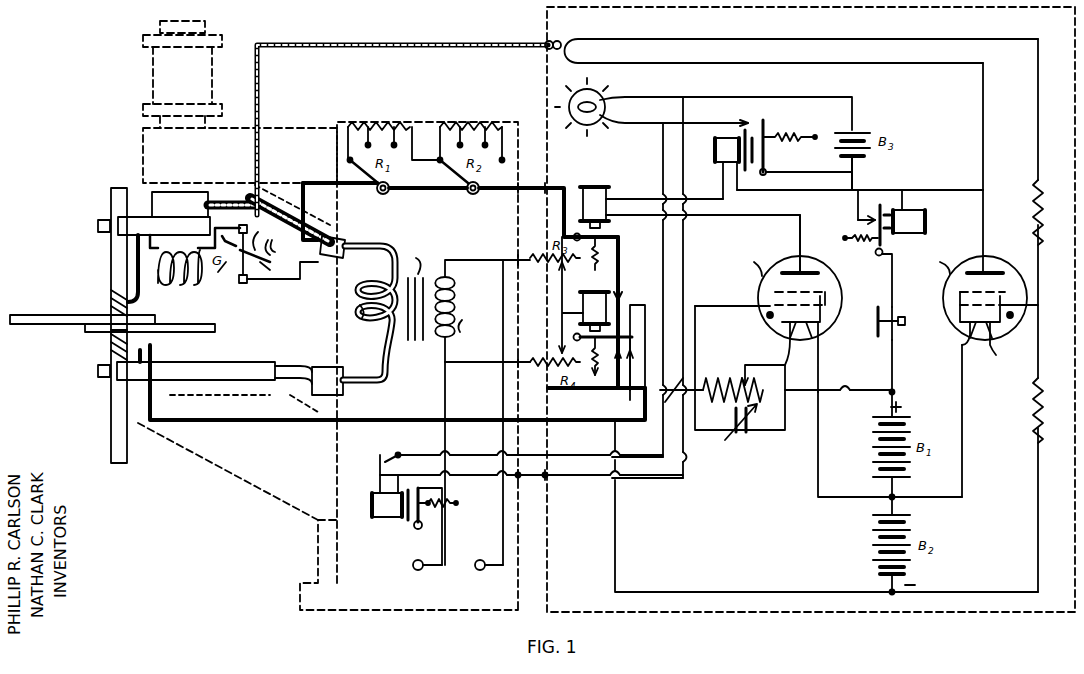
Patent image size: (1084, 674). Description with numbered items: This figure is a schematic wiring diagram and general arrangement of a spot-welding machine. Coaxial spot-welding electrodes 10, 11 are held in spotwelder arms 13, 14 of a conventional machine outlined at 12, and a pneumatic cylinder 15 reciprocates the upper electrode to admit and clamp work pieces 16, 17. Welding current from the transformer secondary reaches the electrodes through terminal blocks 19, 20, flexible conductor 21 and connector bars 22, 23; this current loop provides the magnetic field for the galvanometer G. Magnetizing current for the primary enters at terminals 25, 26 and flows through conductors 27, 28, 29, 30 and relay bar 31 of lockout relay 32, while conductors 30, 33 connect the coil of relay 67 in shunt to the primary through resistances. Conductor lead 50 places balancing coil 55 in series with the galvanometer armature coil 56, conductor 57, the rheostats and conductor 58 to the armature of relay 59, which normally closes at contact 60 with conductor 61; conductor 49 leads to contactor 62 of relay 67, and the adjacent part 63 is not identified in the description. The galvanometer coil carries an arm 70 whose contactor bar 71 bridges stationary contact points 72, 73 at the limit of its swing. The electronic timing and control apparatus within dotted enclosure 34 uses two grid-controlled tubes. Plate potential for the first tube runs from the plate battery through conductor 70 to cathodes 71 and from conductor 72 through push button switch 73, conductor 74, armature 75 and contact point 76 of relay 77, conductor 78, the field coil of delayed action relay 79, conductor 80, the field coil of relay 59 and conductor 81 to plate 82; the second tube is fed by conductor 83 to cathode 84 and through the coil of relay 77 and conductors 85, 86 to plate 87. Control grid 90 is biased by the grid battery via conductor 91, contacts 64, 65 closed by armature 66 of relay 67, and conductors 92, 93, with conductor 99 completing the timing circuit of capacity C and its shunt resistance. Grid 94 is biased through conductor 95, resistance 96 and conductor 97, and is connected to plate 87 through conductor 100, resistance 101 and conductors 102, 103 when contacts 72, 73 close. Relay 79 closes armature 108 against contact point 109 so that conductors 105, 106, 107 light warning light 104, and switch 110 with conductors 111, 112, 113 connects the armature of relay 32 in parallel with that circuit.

The spot-welding electrode 10 is at (112, 253).
The spot-welding electrode 11 is at (110, 418).
The spot-welding machine outline 12 is at (432, 122).
The spotwelder arm 13 is at (244, 478).
The spotwelder arm 14 is at (294, 128).
The pneumatic cylinder 15 is at (155, 64).
The work piece 16 is at (35, 315).
The work piece 17 is at (205, 324).
The terminal block 19 is at (320, 367).
The terminal block 20 is at (324, 229).
The flexible conductor 21 is at (268, 220).
The connector bar 22 is at (235, 362).
The connector bar 23 is at (138, 217).
The terminal 25 is at (413, 568).
The terminal 26 is at (475, 568).
The conductor 27 is at (442, 540).
The conductor 28 is at (500, 540).
The conductor 29 is at (445, 402).
The conductor 30 is at (488, 260).
The relay bar 31 is at (415, 528).
The lockout relay 32 is at (415, 526).
The conductor 33 is at (488, 362).
The dotted enclosure 34 is at (700, 612).
The conductor 49 is at (145, 352).
The conductor lead 50 is at (141, 282).
The balancing coil 55 is at (188, 285).
The armature coil 56 is at (243, 270).
The conductor 57 is at (272, 270).
The conductor 58 is at (563, 188).
The relay 59 is at (598, 200).
The contact 60 is at (620, 238).
The conductor 61 is at (622, 270).
The contactor 62 is at (626, 300).
The relay armature 63 is at (645, 308).
The contact 64 is at (615, 360).
The contact 65 is at (596, 372).
The armature 66 is at (601, 345).
The relay 67 is at (583, 304).
The conductor 70 is at (818, 452).
The cathode 71 is at (266, 268).
The conductor 72 is at (893, 388).
The push button switch 73 is at (890, 320).
The conductor 74 is at (888, 300).
The armature 75 is at (876, 255).
The contact point 76 is at (862, 220).
The relay 77 is at (891, 217).
The conductor 78 is at (858, 192).
The delayed action relay 79 is at (733, 164).
The conductor 80 is at (718, 206).
The conductor 81 is at (716, 228).
The plate 82 is at (806, 268).
The conductor 83 is at (963, 432).
The cathode 84 is at (972, 362).
The conductor 85 is at (958, 190).
The conductor 86 is at (984, 222).
The plate 87 is at (992, 268).
The control grid 90 is at (790, 298).
The conductor 91 is at (738, 592).
The conductor 92 is at (668, 414).
The conductor 93 is at (695, 322).
The control grid 94 is at (1030, 294).
The conductor 95 is at (1040, 562).
The resistance 96 is at (1042, 420).
The conductor 97 is at (1040, 345).
The conductor 99 is at (838, 392).
The conductor 100 is at (1040, 275).
The resistance 101 is at (1044, 225).
The conductor 102 is at (1038, 140).
The conductor 103 is at (985, 136).
The warning light 104 is at (602, 94).
The conductor 105 is at (720, 97).
The conductor 106 is at (780, 174).
The conductor 107 is at (703, 124).
The armature 108 is at (767, 135).
The contact point 109 is at (750, 122).
The switch 110 is at (395, 458).
The conductor 111 is at (374, 495).
The conductor 112 is at (484, 468).
The conductor 113 is at (470, 478).